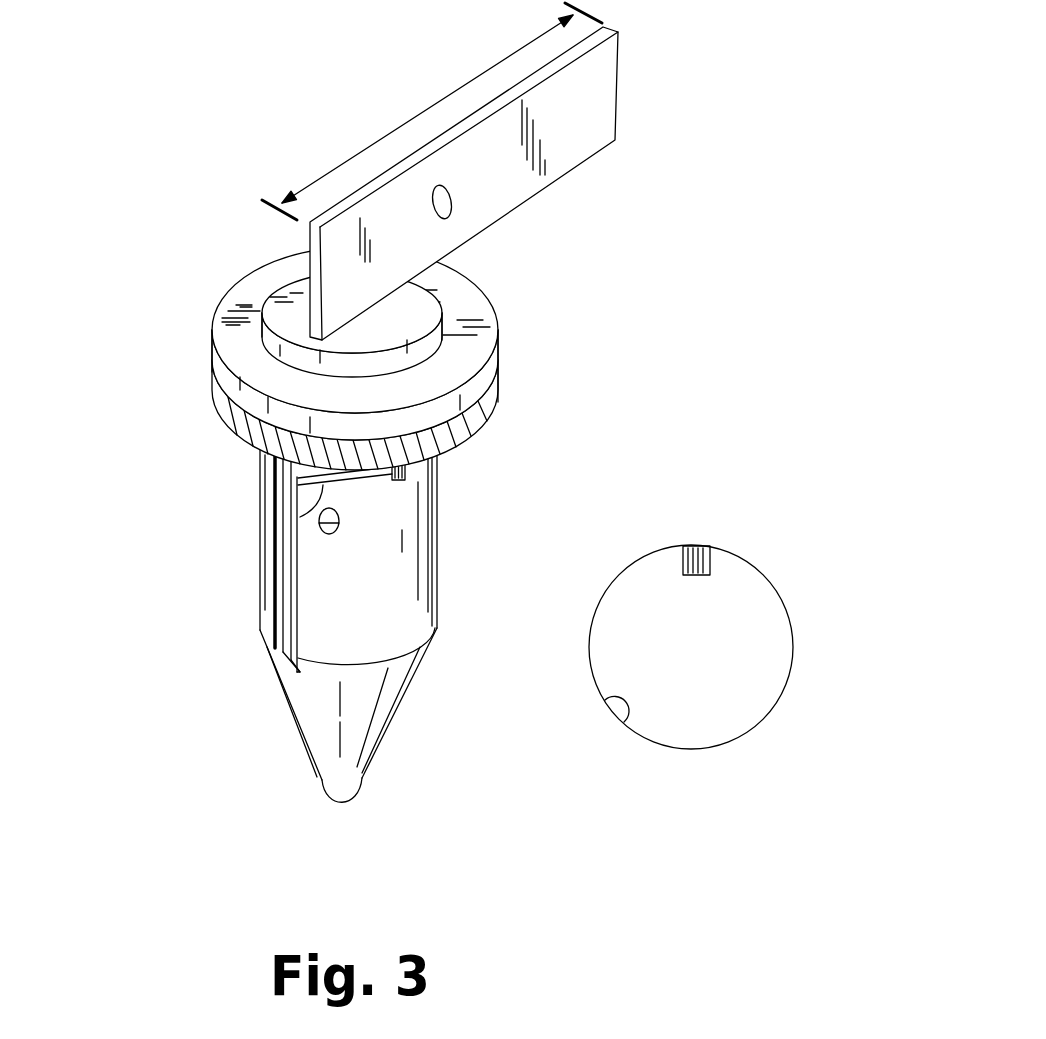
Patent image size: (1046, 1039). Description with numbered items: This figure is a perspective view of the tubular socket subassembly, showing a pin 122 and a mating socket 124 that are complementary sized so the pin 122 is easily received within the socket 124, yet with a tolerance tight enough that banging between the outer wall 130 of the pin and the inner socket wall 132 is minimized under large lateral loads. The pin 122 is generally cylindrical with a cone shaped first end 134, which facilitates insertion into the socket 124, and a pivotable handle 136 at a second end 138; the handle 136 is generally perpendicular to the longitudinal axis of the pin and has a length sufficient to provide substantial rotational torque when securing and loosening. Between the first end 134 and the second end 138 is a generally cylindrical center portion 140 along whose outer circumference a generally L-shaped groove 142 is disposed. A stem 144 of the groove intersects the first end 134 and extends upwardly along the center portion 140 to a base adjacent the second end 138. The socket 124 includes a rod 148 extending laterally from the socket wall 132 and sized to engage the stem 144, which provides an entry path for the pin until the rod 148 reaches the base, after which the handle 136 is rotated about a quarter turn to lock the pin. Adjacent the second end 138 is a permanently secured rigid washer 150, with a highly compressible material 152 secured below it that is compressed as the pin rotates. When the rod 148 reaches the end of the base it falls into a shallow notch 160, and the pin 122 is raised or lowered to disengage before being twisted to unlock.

The pin 122 is at (391, 402).
The socket 124 is at (754, 646).
The outer wall 130 is at (358, 615).
The inner socket wall 132 is at (625, 722).
The cone shaped first end 134 is at (375, 707).
The pivotable handle 136 is at (580, 122).
The second end 138 is at (287, 282).
The center portion 140 is at (388, 609).
The L-shaped groove 142 is at (273, 543).
The stem 144 is at (273, 621).
The rod 148 is at (712, 580).
The rigid washer 150 is at (466, 299).
The highly compressible material 152 is at (497, 398).
The shallow notch 160 is at (400, 472).